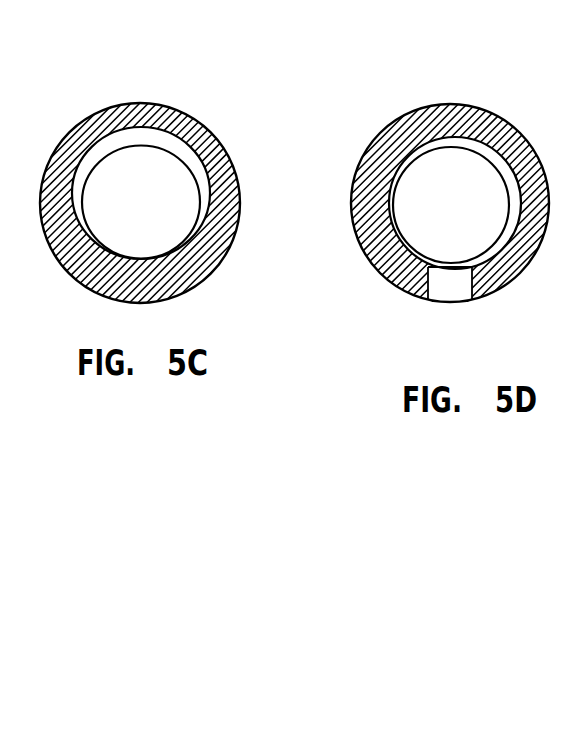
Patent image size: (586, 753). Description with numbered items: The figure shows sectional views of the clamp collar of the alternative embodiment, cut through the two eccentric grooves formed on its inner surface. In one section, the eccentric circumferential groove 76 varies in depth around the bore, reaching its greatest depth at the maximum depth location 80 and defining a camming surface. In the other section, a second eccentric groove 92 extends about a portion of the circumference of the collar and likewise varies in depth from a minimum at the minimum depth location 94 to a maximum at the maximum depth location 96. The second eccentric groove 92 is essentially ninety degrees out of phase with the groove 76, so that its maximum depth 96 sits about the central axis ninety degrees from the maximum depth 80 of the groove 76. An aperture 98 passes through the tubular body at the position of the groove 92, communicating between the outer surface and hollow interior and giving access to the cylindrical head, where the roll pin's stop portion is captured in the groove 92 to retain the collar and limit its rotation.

In FIG. 5C, the eccentric circumferential groove 76 is at (187, 162).
In FIG. 5C, the maximum depth of eccentric groove 80 is at (140, 132).
In FIG. 5D, the second eccentric groove 92 is at (500, 245).
In FIG. 5D, the minimum depth of second eccentric groove 94 is at (408, 162).
In FIG. 5D, the maximum depth of second eccentric groove 96 is at (503, 170).
In FIG. 5D, the aperture 98 is at (445, 287).